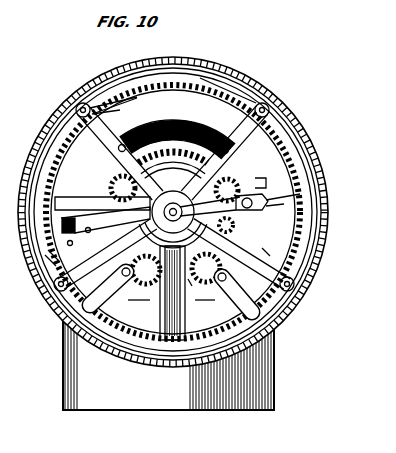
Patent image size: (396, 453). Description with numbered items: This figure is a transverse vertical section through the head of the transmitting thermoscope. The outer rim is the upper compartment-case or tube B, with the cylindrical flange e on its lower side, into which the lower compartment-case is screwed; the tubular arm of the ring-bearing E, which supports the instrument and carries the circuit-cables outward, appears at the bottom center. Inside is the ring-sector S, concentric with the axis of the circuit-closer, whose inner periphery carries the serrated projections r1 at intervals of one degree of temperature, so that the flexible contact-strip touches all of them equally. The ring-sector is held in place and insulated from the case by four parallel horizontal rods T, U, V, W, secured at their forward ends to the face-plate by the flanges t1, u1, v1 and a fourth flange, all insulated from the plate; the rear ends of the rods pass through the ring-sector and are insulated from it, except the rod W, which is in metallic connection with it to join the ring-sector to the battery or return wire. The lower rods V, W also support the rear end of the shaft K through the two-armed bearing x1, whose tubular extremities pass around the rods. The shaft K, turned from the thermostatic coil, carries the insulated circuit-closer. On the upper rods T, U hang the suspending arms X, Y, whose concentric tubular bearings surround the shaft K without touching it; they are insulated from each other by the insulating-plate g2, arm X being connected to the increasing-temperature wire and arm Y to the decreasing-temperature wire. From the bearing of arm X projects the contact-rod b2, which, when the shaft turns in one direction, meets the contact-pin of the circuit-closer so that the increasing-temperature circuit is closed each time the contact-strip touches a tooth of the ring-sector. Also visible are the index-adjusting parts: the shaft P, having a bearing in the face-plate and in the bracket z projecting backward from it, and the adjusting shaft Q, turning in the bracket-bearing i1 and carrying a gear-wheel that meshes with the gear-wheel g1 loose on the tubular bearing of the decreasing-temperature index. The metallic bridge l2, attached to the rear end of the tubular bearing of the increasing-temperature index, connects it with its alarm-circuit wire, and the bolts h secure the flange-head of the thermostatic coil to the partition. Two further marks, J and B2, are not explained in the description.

The cylindrical flange e is at (168, 365).
The upper compartment tube B is at (312, 207).
The ring-sector S is at (169, 207).
The insulating-plate g2 is at (177, 130).
The serrated projections r1 is at (177, 174).
The two-armed bearing x1 is at (173, 219).
The suspending arm X is at (120, 152).
The suspending arm Y is at (224, 152).
The horizontal rod T is at (56, 111).
The horizontal rod U is at (290, 110).
The horizontal rod V is at (50, 287).
The horizontal rod W is at (298, 289).
The metallic bridge l2 is at (102, 214).
The flange v1 is at (62, 260).
The flange t1 is at (116, 107).
The shaft K is at (250, 217).
The gear-wheel g1 is at (283, 205).
The bracket B2 is at (251, 184).
The contact-rod b2 is at (237, 233).
The flange u1 is at (271, 204).
The ring-bearing E is at (172, 293).
The bolts h is at (146, 276).
The bracket-bearing i1 is at (110, 286).
The bracket z is at (222, 283).
The link J is at (187, 288).
The adjusting shaft Q is at (139, 311).
The adjusting shaft P is at (205, 311).